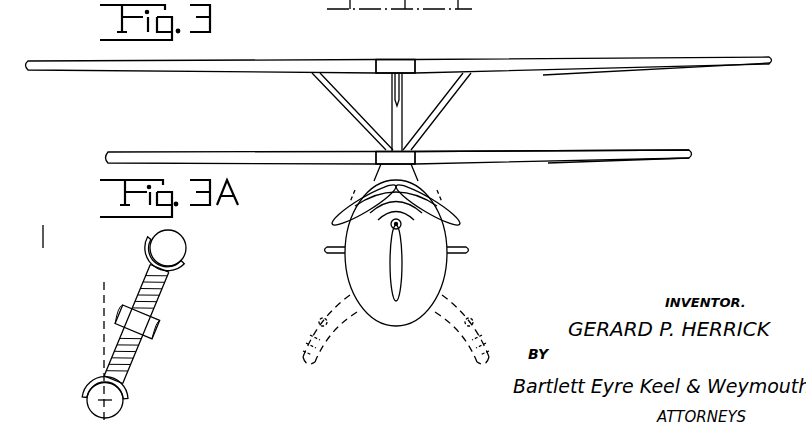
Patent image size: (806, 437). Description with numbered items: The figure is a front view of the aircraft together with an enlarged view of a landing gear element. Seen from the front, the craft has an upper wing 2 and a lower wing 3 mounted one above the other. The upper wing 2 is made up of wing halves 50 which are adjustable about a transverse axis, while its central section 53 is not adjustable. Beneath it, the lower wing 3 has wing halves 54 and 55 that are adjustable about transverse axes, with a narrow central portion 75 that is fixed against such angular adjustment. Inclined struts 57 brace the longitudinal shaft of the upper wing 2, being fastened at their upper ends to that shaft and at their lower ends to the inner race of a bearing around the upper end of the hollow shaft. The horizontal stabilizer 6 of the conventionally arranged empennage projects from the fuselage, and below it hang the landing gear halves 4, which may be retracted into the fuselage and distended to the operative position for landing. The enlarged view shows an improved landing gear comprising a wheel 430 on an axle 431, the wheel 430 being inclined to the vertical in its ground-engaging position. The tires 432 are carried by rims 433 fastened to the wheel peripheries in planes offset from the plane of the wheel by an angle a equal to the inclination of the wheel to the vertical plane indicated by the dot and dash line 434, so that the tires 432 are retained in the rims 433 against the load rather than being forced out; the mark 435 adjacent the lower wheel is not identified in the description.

In FIG. 3, the upper wing 2 is at (543, 73).
In FIG. 3, the lower wing 3 is at (549, 162).
In FIG. 3, the landing gear halves 4 is at (327, 305).
In FIG. 3, the horizontal stabilizer 6 is at (468, 253).
In FIG. 3, the wing halves 50 is at (196, 74).
In FIG. 3, the central section 53 is at (398, 62).
In FIG. 3, the wing half 54 is at (172, 151).
In FIG. 3, the wing half 55 is at (650, 148).
In FIG. 3, the inclined struts 57 is at (346, 106).
In FIG. 3, the narrow central portion 75 is at (378, 152).
In FIG. 3A, the wheel 430 is at (160, 299).
In FIG. 3A, the axle 431 is at (153, 330).
In FIG. 3A, the tires 432 is at (187, 248).
In FIG. 3A, the rims 433 is at (144, 249).
In FIG. 3A, the dot and dash line 434 is at (103, 300).
In FIG. 3A, the axis 435 is at (84, 400).
In FIG. 3A, the angle a is at (114, 334).